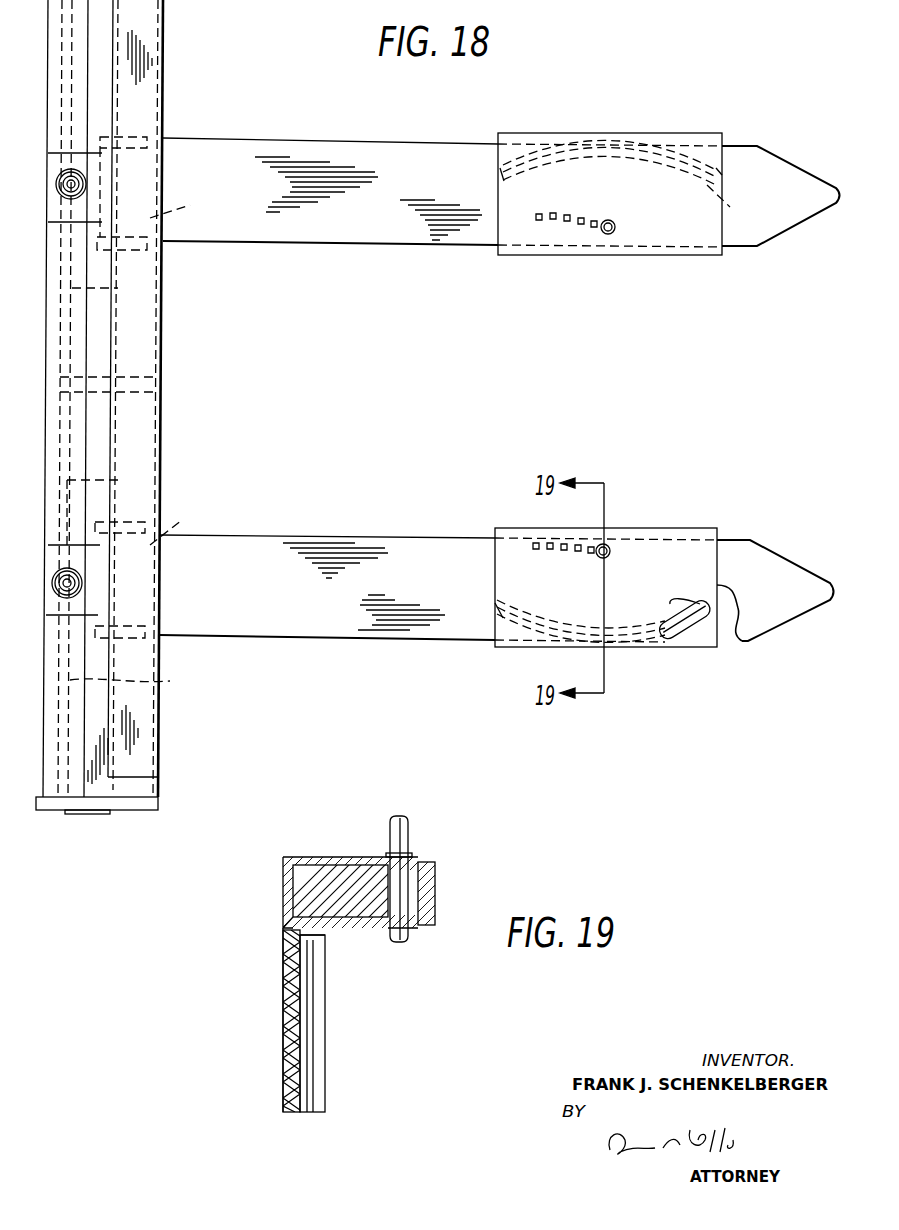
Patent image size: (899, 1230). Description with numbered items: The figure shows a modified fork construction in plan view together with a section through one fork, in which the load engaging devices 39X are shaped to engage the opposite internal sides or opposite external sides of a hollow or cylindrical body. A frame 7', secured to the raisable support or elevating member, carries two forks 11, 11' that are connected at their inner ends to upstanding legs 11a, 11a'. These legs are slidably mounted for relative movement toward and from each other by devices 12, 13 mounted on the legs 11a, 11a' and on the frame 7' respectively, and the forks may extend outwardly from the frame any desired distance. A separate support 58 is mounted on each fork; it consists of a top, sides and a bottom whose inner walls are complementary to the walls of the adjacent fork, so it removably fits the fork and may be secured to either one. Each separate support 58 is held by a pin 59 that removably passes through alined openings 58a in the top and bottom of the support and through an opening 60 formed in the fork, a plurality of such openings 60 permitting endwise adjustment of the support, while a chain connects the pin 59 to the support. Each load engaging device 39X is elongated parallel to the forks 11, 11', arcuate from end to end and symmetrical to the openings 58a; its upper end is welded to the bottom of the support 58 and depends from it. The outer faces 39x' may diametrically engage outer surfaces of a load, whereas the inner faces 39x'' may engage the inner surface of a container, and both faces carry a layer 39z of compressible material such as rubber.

In FIG. 18, the frame 7' is at (99, 424).
In FIG. 18, the fork 11 is at (497, 608).
In FIG. 19, the fork 11 is at (342, 890).
In FIG. 18, the fork 11' is at (501, 213).
In FIG. 18, the upstanding leg 11a is at (187, 520).
In FIG. 18, the upstanding leg 11a' is at (192, 199).
In FIG. 18, the device 12 is at (80, 572).
In FIG. 18, the device 13 is at (137, 686).
In FIG. 18, the separate support 58 is at (663, 237).
In FIG. 19, the alined openings 58a is at (425, 858).
In FIG. 18, the pin 59 is at (612, 222).
In FIG. 19, the pin 59 is at (405, 832).
In FIG. 19, the through opening 60 is at (435, 890).
In FIG. 18, the load engaging device 39X is at (690, 140).
In FIG. 19, the load engaging device 39X is at (378, 1089).
In FIG. 18, the face 39x' is at (717, 384).
In FIG. 18, the face 39x'' is at (609, 400).
In FIG. 19, the layer 39z is at (310, 1001).